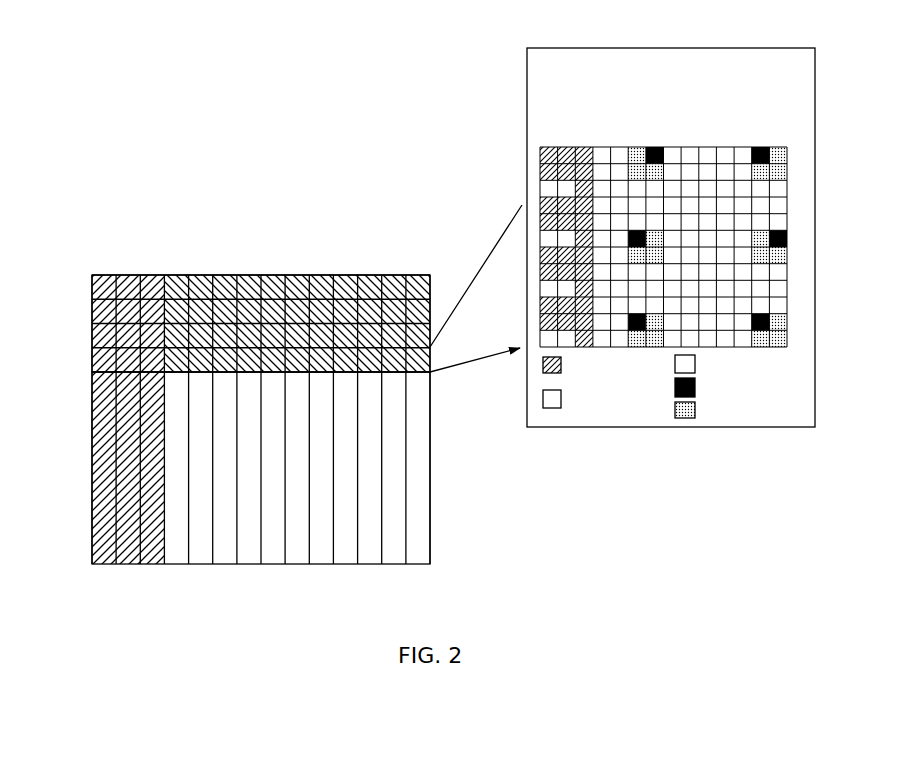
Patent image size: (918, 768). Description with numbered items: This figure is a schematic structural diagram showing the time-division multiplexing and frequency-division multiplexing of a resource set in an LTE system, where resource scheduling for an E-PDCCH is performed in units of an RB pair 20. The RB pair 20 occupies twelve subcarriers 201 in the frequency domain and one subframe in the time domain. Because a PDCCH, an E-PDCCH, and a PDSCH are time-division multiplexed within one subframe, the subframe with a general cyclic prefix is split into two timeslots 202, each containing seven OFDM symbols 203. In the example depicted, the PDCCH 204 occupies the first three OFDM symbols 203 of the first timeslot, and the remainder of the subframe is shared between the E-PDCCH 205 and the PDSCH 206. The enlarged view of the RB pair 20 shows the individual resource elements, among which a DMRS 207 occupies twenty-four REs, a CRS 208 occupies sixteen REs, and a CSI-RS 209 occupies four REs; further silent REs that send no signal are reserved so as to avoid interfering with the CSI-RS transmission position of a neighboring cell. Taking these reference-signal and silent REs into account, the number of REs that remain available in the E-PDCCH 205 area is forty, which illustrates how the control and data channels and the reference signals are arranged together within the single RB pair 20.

The RB pair 20 is at (668, 60).
The subcarriers 201 is at (92, 288).
The timeslots 202 is at (725, 120).
The OFDM symbols 203 is at (97, 565).
The PDCCH 204 is at (92, 270).
The E-PDCCH 205 is at (448, 277).
The PDSCH 206 is at (448, 377).
The DMRS 207 is at (707, 285).
The CRS 208 is at (676, 262).
The CSI-RS 209 is at (707, 273).